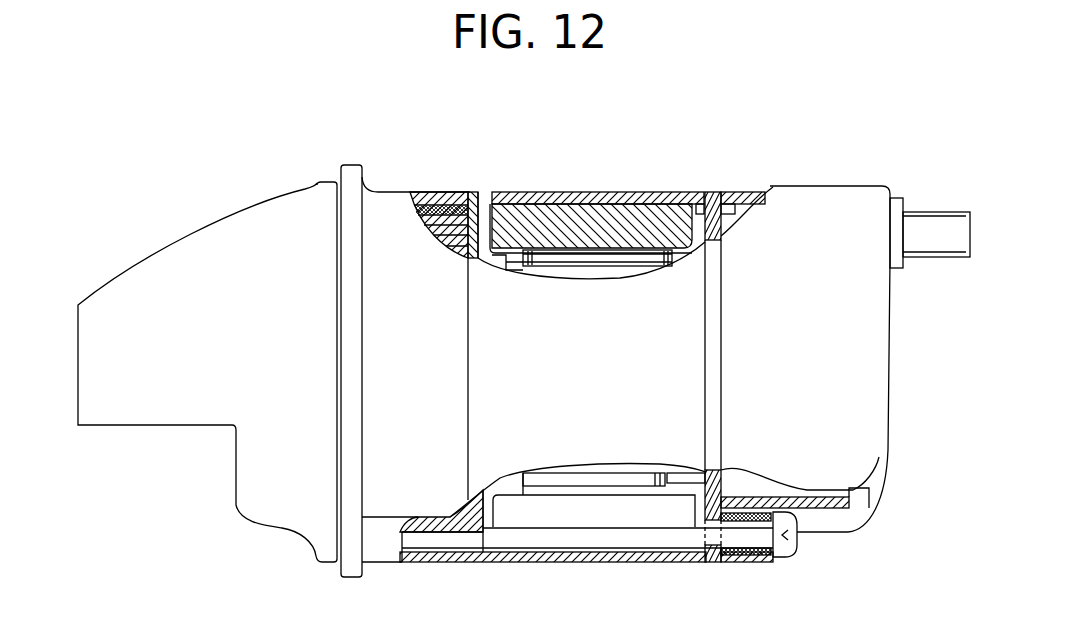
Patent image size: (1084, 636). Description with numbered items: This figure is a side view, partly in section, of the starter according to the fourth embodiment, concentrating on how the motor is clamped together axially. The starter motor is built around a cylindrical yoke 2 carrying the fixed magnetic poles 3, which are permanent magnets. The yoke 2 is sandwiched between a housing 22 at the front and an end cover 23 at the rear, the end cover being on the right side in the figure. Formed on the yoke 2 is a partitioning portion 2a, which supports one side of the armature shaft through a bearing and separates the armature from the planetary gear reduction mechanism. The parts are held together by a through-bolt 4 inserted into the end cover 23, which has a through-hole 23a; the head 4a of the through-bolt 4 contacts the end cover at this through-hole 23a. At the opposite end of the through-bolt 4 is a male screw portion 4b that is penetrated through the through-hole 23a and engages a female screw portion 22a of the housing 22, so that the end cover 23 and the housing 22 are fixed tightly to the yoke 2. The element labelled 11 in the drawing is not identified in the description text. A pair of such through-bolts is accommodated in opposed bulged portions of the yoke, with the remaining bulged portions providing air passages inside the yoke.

The yoke 2 is at (641, 196).
The partitioning portion 2a is at (472, 235).
The fixed magnetic poles 3 is at (684, 222).
The through-bolt 4 is at (635, 545).
The head of the through-bolt 4a is at (797, 548).
The male screw portion 4b is at (412, 540).
The rotor 11 is at (585, 257).
The housing 22 is at (210, 250).
The female screw portion 22a is at (432, 565).
The end cover 23 is at (853, 397).
The through-hole 23a is at (750, 562).